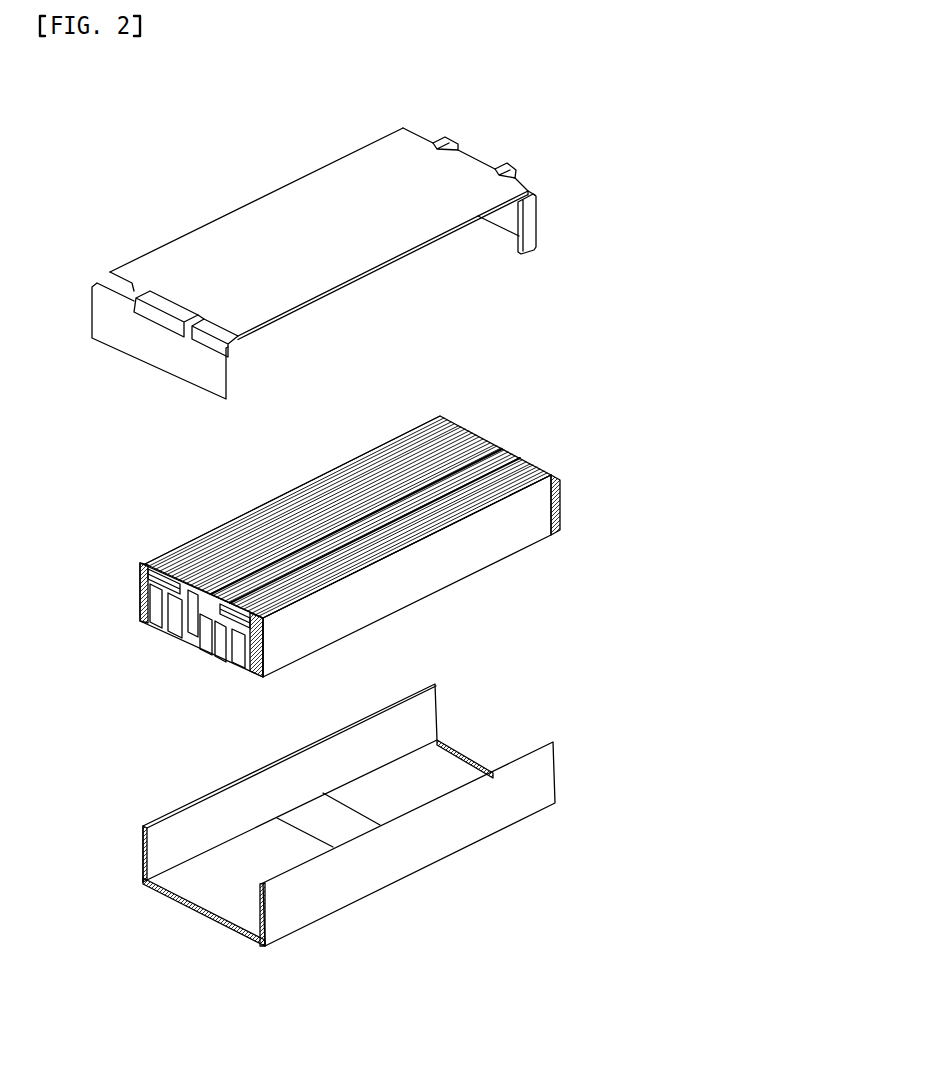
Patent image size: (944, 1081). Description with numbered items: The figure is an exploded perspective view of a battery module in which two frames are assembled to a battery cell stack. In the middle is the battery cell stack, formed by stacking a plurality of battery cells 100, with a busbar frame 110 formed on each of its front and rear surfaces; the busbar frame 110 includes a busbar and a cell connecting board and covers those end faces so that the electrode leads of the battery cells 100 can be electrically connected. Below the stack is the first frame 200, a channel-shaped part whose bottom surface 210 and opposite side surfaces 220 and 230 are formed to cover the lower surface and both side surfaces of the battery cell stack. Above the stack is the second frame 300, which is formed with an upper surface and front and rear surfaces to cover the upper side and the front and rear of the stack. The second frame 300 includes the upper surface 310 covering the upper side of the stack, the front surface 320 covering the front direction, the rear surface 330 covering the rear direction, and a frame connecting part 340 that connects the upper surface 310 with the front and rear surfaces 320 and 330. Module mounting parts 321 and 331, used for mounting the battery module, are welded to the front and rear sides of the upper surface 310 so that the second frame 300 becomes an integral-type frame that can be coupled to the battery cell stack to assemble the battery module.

The battery cells 100 is at (333, 478).
The busbar frame 110 is at (133, 594).
The first frame 200 is at (430, 845).
The bottom surface 210 is at (212, 923).
The side surface 220 is at (548, 788).
The side surface 230 is at (417, 728).
The second frame 300 is at (94, 205).
The upper surface of the second frame 310 is at (268, 204).
The front surface of the second frame 320 is at (130, 352).
The module mounting part 321 is at (160, 343).
The rear surface of the second frame 330 is at (537, 218).
The module mounting part 331 is at (580, 224).
The frame connecting part 340 is at (448, 137).